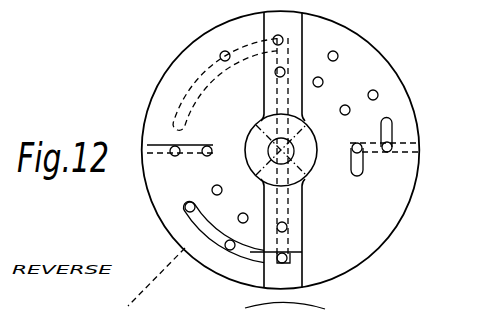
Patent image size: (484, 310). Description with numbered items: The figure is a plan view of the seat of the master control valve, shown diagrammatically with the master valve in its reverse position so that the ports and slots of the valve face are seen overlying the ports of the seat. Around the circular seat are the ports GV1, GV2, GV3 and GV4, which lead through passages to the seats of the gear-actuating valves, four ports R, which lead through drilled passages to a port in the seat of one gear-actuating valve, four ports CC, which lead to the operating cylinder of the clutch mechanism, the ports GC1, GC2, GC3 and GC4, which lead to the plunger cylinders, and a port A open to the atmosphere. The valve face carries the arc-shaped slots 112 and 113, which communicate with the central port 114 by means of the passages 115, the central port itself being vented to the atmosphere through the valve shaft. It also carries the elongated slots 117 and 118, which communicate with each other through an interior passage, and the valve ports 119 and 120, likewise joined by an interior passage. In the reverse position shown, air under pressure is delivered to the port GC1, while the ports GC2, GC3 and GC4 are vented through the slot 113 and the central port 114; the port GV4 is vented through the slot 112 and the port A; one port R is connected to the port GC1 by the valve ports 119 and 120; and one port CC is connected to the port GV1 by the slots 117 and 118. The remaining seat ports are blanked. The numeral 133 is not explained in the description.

The arc-shaped slot 112 is at (190, 86).
The arc-shaped slot 113 is at (250, 261).
The central port 114 is at (308, 172).
The passages 115 is at (264, 93).
The elongated slot 117 is at (392, 121).
The elongated slot 118 is at (363, 172).
The valve port 119 is at (200, 153).
The valve port 120 is at (178, 145).
The adjacent element 133 is at (472, 272).
The port A is at (225, 50).
The ports R is at (207, 146).
The ports CC is at (275, 73).
The port GV1 is at (392, 156).
The port GV2 is at (376, 83).
The port GV3 is at (339, 46).
The port GV4 is at (288, 26).
The port GC1 is at (173, 147).
The port GC2 is at (187, 204).
The port GC3 is at (228, 248).
The port GC4 is at (288, 257).